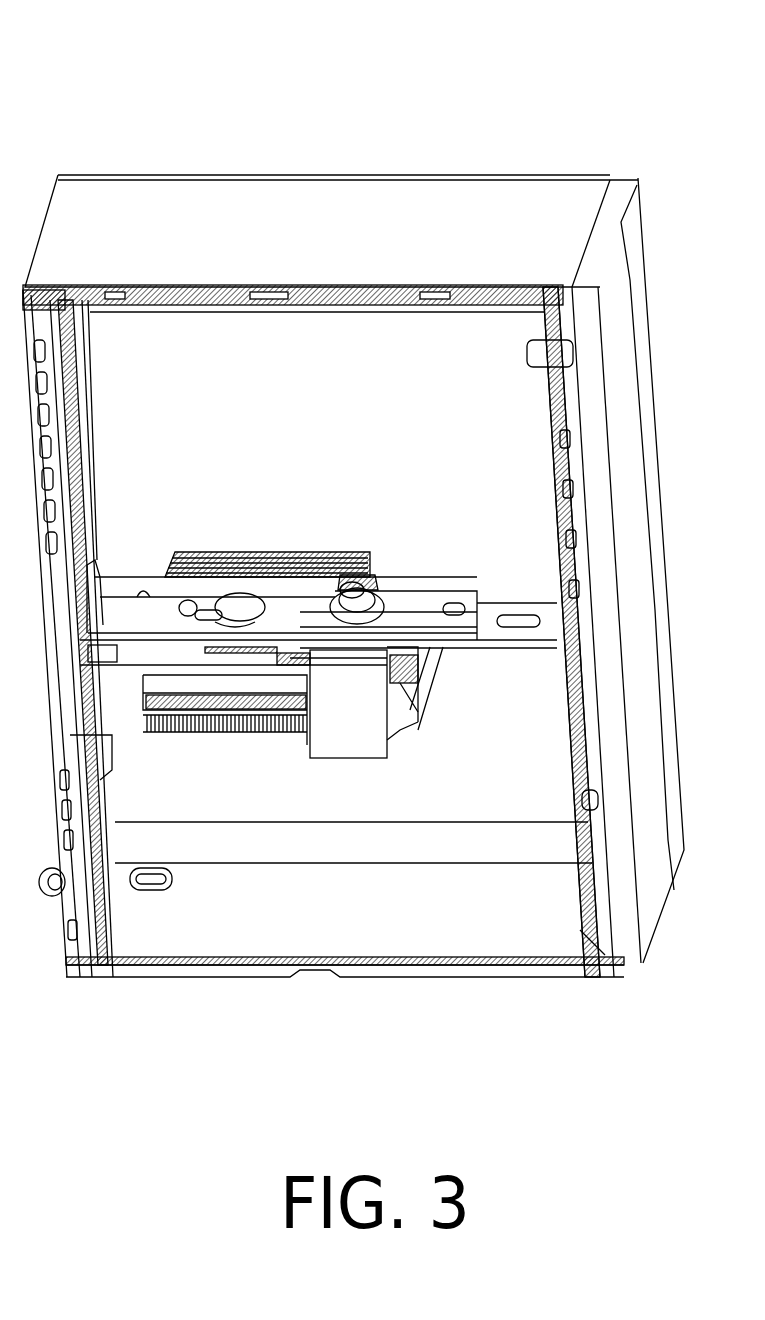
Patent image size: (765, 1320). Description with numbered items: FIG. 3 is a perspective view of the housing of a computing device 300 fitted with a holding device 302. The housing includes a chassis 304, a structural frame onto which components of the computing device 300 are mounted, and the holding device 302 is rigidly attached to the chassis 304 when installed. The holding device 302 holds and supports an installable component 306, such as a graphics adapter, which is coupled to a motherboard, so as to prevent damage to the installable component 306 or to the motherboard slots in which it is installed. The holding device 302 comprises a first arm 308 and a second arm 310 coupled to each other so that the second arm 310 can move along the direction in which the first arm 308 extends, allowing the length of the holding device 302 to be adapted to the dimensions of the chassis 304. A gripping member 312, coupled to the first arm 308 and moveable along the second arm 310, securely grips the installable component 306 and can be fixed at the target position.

The computing device 300 is at (633, 62).
The holding device 302 is at (305, 542).
The chassis 304 is at (506, 175).
The installable component 306 is at (118, 722).
The first arm 308 is at (433, 598).
The second arm 310 is at (512, 608).
The gripping member 312 is at (360, 743).